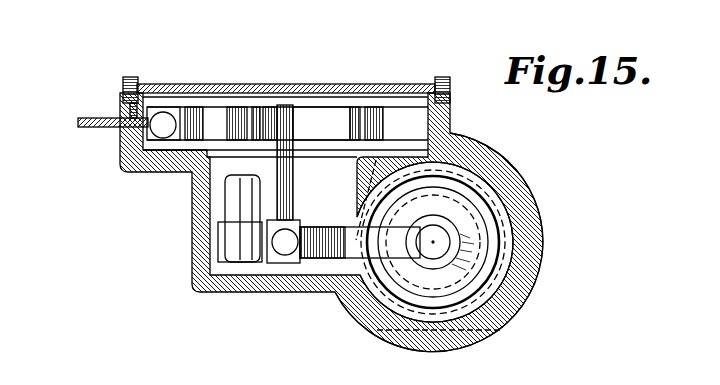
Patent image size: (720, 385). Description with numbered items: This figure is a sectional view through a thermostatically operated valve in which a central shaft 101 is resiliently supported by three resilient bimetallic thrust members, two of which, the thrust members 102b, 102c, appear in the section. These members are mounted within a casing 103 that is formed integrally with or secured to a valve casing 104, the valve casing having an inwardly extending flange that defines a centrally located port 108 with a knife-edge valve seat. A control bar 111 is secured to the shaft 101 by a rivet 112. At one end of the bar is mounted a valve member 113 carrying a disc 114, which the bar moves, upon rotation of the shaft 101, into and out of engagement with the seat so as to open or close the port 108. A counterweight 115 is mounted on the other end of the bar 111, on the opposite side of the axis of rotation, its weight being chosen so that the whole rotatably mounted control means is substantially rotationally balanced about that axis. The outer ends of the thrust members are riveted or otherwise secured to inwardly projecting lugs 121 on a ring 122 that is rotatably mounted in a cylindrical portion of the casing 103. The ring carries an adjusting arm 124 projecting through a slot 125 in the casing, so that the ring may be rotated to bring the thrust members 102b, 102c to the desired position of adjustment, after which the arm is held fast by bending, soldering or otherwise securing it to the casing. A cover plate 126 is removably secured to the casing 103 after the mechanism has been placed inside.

The central shaft 101 is at (291, 175).
The resilient bimetallic thrust member 102b is at (368, 108).
The resilient bimetallic thrust member 102c is at (232, 108).
The casing 103 is at (185, 255).
The valve casing 104 is at (505, 190).
The port 108 is at (410, 283).
The control bar 111 is at (318, 262).
The rivet 112 is at (283, 250).
The valve member 113 is at (448, 233).
The disc 114 is at (495, 243).
The counterweight 115 is at (232, 202).
The inwardly projecting lug 121 is at (168, 107).
The ring 122 is at (133, 97).
The adjusting arm 124 is at (96, 123).
The slot 125 is at (133, 140).
The cover plate 126 is at (318, 108).